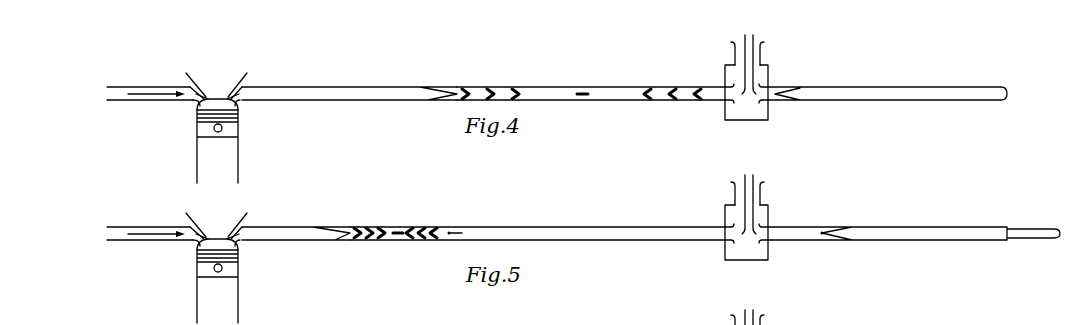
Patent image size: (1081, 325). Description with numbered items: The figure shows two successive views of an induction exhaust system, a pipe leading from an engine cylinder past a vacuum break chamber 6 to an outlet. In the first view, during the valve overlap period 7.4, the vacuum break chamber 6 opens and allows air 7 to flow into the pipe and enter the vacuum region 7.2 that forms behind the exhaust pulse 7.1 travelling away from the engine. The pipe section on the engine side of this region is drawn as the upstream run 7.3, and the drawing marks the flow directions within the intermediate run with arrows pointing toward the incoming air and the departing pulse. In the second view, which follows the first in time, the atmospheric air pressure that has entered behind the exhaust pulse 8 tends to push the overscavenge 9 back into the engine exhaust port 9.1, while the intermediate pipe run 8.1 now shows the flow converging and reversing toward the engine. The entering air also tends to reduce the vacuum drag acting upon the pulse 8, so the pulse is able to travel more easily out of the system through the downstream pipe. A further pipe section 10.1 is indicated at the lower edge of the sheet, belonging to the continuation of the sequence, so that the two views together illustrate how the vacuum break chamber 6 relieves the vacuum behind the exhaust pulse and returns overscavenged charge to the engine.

In FIG. 4, the vacuum break chamber 6 is at (722, 108).
In FIG. 5, the vacuum break chamber 6 is at (746, 221).
In FIG. 4, the air 7 is at (748, 29).
In FIG. 5, the air 7 is at (749, 204).
In FIG. 4, the exhaust pulse 7.1 is at (848, 85).
In FIG. 4, the vacuum region 7.2 is at (580, 82).
In FIG. 4, the upstream pipe section 7.3 is at (335, 82).
In FIG. 4, the valve overlap period 7.4 is at (190, 110).
In FIG. 5, the exhaust pulse 8 is at (828, 215).
In FIG. 5, the intermediate pipe 8.1 is at (518, 215).
In FIG. 5, the overscavenge 9 is at (312, 217).
In FIG. 5, the engine exhaust port 9.1 is at (182, 258).
In FIG. 5, the pipe section 10.1 is at (338, 324).